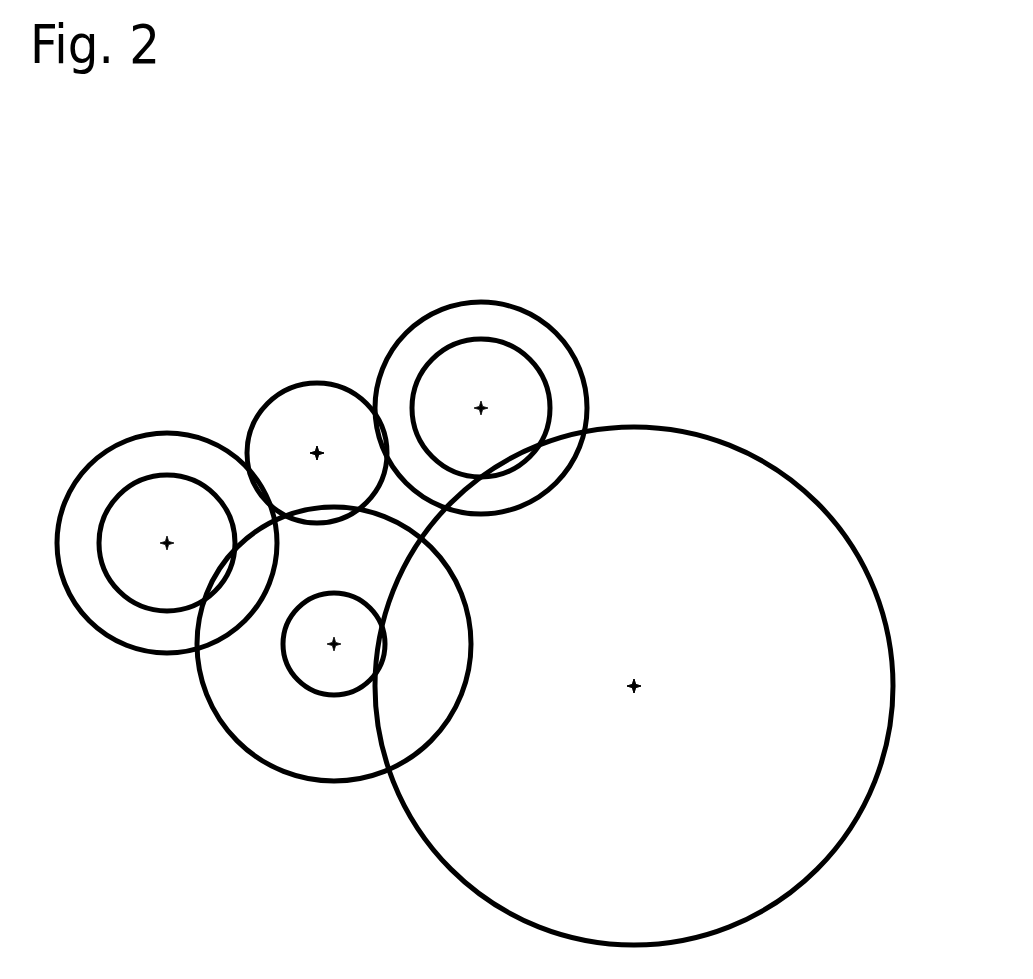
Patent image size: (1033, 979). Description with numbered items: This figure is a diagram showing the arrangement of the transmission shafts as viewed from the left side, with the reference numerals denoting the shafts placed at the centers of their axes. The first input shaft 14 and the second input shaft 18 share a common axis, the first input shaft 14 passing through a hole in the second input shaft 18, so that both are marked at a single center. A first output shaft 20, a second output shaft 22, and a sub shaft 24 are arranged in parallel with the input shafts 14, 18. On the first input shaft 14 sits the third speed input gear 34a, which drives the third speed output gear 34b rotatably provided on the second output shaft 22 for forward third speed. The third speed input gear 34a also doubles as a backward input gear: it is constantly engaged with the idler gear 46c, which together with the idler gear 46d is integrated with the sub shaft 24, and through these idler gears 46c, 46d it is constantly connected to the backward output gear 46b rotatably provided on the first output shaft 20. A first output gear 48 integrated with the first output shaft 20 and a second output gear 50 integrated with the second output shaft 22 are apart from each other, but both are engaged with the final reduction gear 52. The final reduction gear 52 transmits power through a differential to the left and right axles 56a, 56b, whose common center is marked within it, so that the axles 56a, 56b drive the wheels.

The first input shaft 14 is at (318, 448).
The second input shaft 18 is at (317, 453).
The first output shaft 20 is at (333, 650).
The second output shaft 22 is at (482, 404).
The sub shaft 24 is at (168, 540).
The third speed input gear 34a is at (345, 385).
The third speed output gear 34b is at (465, 300).
The backward output gear 46b is at (290, 773).
The idler gear 46c is at (85, 617).
The idler gear 46d is at (108, 503).
The first output gear 48 is at (292, 675).
The second output gear 50 is at (545, 385).
The final reduction gear 52 is at (420, 838).
The left axle 56a is at (634, 692).
The right axle 56b is at (634, 686).